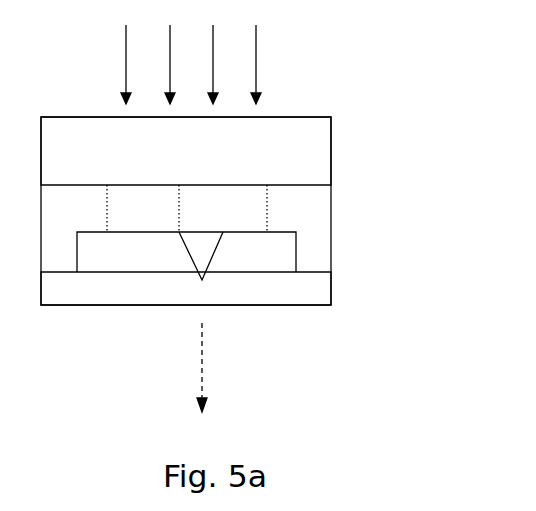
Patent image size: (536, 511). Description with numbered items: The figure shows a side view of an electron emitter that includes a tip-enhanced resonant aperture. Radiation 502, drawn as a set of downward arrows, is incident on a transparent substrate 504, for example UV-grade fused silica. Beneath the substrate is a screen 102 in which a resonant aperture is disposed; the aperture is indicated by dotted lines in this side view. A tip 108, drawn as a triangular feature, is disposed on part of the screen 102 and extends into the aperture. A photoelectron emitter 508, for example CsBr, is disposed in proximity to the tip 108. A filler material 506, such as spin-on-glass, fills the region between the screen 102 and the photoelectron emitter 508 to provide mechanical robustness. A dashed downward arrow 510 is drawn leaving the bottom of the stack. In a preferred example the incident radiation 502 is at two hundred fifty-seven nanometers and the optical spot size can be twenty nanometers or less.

The screen 102 is at (308, 220).
The tip 108 is at (197, 255).
The radiation 502 is at (126, 58).
The transparent substrate 504 is at (212, 164).
The filler material 506 is at (146, 266).
The photoelectron emitter 508 is at (281, 302).
The transmitted light 510 is at (203, 348).